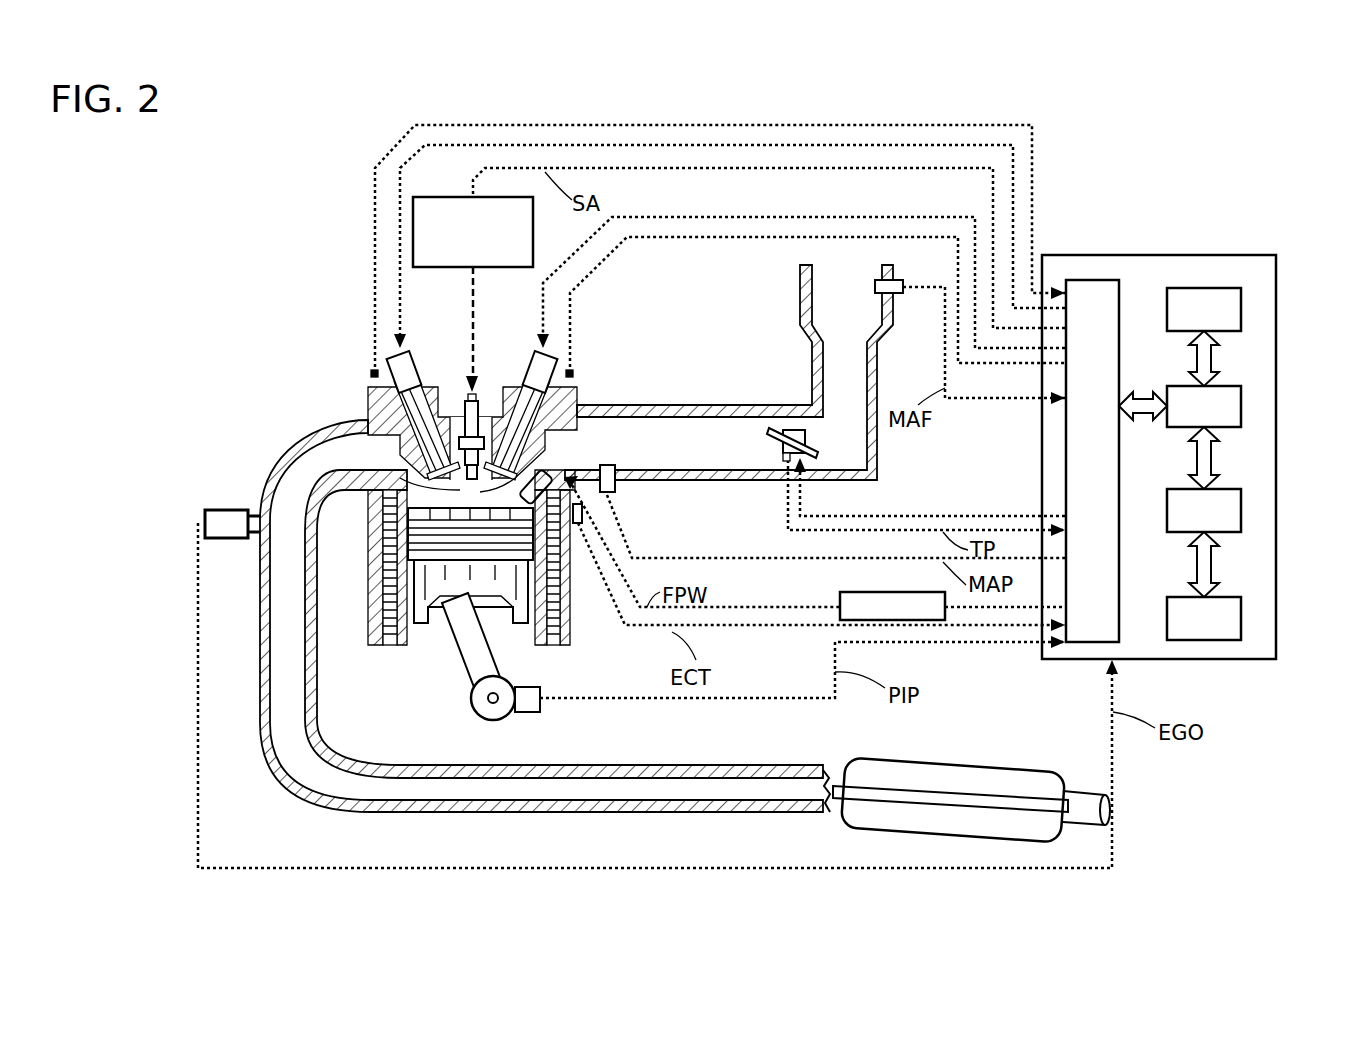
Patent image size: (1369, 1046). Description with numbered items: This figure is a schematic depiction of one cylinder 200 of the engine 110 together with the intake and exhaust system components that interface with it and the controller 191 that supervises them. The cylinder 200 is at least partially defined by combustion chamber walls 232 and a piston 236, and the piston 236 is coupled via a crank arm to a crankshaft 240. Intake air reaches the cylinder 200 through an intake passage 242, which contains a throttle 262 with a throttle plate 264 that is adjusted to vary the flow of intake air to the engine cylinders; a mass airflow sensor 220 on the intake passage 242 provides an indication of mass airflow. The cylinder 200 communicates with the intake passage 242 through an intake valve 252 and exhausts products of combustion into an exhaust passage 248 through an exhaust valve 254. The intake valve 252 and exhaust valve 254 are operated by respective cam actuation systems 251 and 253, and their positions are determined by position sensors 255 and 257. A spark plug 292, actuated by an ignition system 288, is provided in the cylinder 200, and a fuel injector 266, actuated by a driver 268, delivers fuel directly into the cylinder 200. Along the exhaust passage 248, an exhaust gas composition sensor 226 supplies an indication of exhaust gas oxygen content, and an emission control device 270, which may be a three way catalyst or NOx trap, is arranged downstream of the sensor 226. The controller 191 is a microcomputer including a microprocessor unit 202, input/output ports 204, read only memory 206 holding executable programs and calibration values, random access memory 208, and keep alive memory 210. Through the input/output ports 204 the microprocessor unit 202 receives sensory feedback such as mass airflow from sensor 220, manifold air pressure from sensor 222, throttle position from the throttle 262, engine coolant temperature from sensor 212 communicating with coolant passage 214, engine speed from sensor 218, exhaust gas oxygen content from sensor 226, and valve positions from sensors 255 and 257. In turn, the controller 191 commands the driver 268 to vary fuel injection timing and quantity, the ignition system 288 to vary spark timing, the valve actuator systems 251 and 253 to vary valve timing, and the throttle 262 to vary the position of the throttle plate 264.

The engine 110 is at (296, 338).
The controller 191 is at (1268, 256).
The cylinder 200 is at (388, 504).
The microprocessor unit 202 is at (1241, 402).
The input/output ports 204 is at (1119, 283).
The read only memory 206 is at (1241, 308).
The random access memory 208 is at (1241, 512).
The keep alive memory 210 is at (1241, 620).
The engine coolant temperature sensor 212 is at (578, 524).
The coolant passage 214 is at (560, 610).
The engine speed sensor 218 is at (528, 714).
The mass air flow sensor 220 is at (900, 280).
The manifold air pressure sensor 222 is at (612, 492).
The exhaust gas composition sensor 226 is at (206, 516).
The combustion chamber walls 232 is at (405, 632).
The piston 236 is at (455, 600).
The crankshaft 240 is at (485, 718).
The intake passage 242 is at (865, 315).
The exhaust passage 248 is at (358, 459).
The intake valve actuator system 251 is at (530, 346).
The intake valve 252 is at (506, 455).
The exhaust valve actuator 253 is at (412, 346).
The exhaust valve 254 is at (428, 462).
The intake valve position sensor 255 is at (570, 380).
The exhaust valve position sensor 257 is at (380, 376).
The throttle 262 is at (806, 437).
The throttle plate 264 is at (772, 430).
The fuel injector 266 is at (540, 482).
The driver 268 is at (845, 593).
The emission control device 270 is at (1020, 768).
The ignition system 288 is at (429, 197).
The spark plug 292 is at (462, 435).